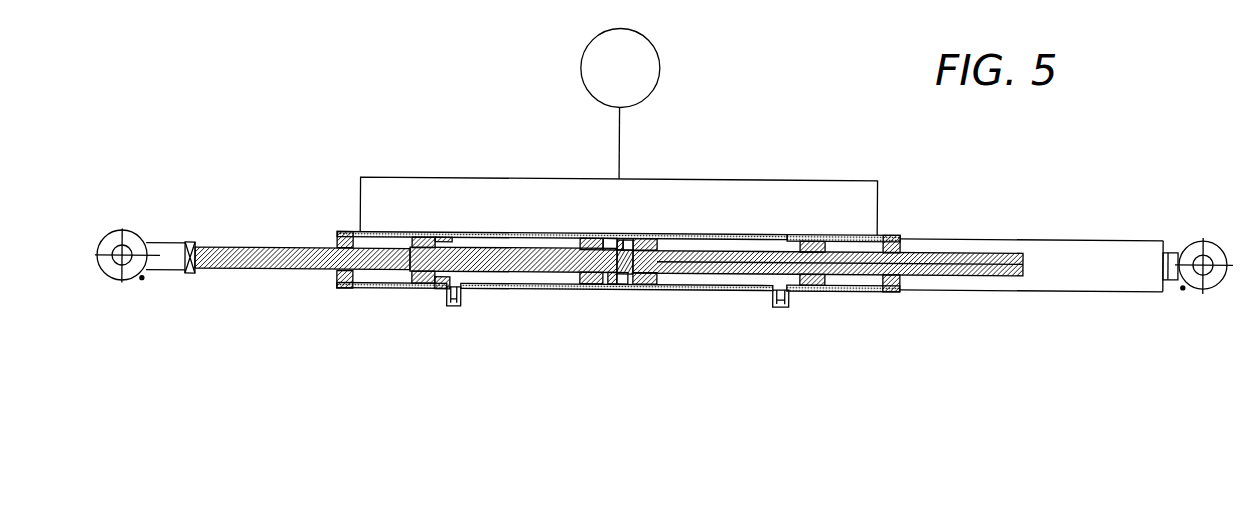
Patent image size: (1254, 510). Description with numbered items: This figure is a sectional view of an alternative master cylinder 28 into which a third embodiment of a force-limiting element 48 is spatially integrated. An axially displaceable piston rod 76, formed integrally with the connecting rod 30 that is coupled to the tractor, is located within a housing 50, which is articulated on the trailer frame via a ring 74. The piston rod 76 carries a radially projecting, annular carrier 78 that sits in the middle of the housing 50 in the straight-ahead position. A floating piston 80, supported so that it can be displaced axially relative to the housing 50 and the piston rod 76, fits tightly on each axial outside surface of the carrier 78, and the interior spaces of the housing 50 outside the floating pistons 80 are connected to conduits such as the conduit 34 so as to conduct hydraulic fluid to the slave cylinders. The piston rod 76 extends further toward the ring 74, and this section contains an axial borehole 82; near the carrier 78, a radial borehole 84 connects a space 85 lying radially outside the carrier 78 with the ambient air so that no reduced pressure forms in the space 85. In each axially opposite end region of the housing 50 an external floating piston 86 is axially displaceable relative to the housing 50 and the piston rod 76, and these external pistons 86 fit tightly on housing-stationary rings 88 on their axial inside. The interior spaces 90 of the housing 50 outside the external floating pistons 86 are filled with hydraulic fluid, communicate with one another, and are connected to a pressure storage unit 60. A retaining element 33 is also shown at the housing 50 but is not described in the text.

The master cylinder 28 is at (660, 381).
The connecting rod 30 is at (230, 263).
The retaining clip 33 is at (777, 307).
The conduit 34 is at (455, 308).
The force-limiting element 48 is at (363, 322).
The housing 50 is at (628, 237).
The pressure storage unit 60 is at (660, 68).
The ring 74 is at (1210, 283).
The piston rod 76 is at (517, 262).
The carrier 78 is at (623, 286).
The floating piston 80 is at (594, 284).
The axial borehole 82 is at (1012, 280).
The radial borehole 84 is at (622, 238).
The space 85 is at (620, 285).
The external floating piston 86 is at (428, 287).
The housing-stationary ring 88 is at (447, 235).
The interior space 90 is at (380, 233).